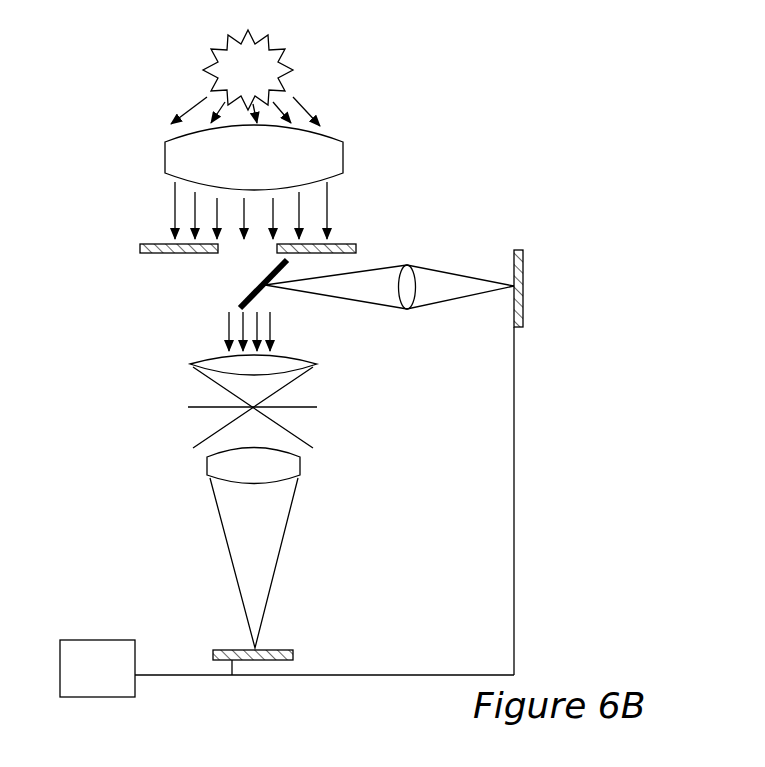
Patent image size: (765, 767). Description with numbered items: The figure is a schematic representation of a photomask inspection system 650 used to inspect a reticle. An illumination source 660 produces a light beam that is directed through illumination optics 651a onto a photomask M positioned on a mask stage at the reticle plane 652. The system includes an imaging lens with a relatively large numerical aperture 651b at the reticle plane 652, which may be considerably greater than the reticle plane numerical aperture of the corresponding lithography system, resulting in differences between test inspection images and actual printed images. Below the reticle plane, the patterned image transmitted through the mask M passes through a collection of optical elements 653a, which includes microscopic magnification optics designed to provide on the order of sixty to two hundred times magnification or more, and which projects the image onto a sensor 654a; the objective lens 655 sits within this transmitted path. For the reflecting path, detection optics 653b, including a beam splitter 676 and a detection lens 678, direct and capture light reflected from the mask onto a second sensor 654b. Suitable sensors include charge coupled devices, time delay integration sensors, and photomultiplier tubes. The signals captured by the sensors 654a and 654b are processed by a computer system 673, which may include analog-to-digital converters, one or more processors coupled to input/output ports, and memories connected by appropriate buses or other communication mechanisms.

The inspection system 650 is at (367, 65).
The illumination source 660 is at (275, 43).
The illumination optics 651a is at (118, 374).
The beam splitter 676 is at (263, 287).
The detection optics 653b is at (285, 261).
The detection lens 678 is at (409, 288).
The sensor 654b is at (517, 248).
The numerical aperture 651b is at (283, 389).
The reticle plane 652 is at (181, 407).
The photomask M is at (300, 407).
The objective lens 655 is at (252, 548).
The optical elements 653a is at (155, 412).
The sensor 654a is at (273, 647).
The computer system 673 is at (287, 668).